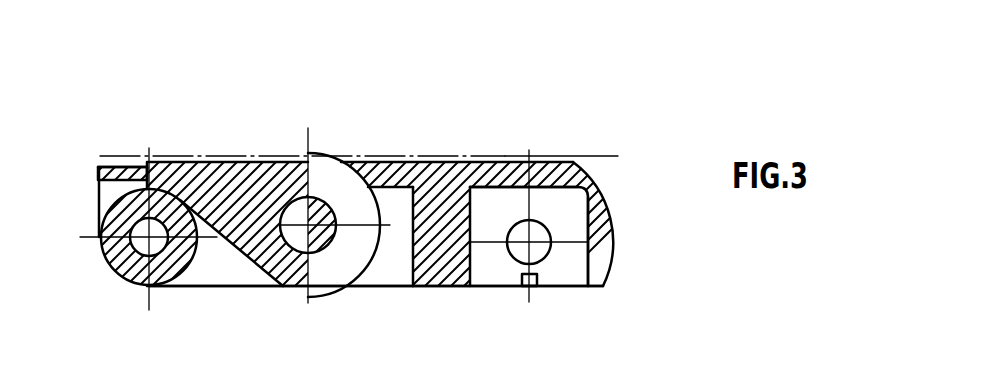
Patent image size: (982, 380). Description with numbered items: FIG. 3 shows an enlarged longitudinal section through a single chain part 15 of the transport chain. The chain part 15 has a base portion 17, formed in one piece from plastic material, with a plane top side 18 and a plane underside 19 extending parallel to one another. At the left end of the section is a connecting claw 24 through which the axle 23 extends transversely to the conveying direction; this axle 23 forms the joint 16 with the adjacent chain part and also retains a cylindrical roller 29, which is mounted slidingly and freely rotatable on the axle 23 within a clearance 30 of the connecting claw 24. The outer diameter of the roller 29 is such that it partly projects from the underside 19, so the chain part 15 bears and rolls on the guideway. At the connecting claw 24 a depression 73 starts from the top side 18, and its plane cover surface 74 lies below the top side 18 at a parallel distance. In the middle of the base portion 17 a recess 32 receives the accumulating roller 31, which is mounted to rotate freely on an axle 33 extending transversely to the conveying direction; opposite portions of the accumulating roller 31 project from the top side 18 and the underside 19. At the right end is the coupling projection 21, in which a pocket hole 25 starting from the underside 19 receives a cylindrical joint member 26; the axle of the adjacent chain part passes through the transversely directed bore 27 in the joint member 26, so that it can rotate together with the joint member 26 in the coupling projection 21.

The chain part 15 is at (410, 297).
The joint 16 is at (530, 240).
The base portion 17 is at (455, 163).
The top side 18 is at (215, 168).
The underside 19 is at (442, 288).
The coupling projection 21 is at (583, 157).
The axle 23 is at (140, 248).
The connecting claw 24 is at (132, 168).
The pocket hole 25 is at (585, 170).
The joint member 26 is at (573, 272).
The bore 27 is at (522, 250).
The roller 29 is at (193, 266).
The clearance 30 is at (235, 265).
The accumulating roller 31 is at (323, 292).
The recess 32 is at (372, 284).
The axle 33 is at (320, 207).
The depression 73 is at (113, 163).
The cover surface 74 is at (141, 168).